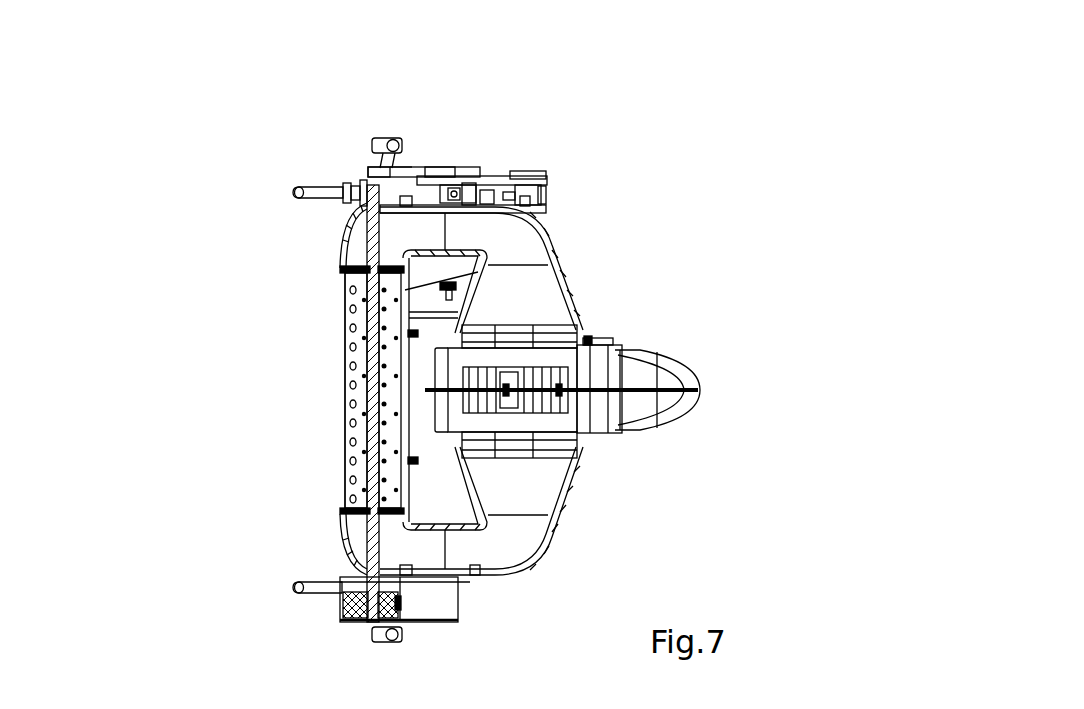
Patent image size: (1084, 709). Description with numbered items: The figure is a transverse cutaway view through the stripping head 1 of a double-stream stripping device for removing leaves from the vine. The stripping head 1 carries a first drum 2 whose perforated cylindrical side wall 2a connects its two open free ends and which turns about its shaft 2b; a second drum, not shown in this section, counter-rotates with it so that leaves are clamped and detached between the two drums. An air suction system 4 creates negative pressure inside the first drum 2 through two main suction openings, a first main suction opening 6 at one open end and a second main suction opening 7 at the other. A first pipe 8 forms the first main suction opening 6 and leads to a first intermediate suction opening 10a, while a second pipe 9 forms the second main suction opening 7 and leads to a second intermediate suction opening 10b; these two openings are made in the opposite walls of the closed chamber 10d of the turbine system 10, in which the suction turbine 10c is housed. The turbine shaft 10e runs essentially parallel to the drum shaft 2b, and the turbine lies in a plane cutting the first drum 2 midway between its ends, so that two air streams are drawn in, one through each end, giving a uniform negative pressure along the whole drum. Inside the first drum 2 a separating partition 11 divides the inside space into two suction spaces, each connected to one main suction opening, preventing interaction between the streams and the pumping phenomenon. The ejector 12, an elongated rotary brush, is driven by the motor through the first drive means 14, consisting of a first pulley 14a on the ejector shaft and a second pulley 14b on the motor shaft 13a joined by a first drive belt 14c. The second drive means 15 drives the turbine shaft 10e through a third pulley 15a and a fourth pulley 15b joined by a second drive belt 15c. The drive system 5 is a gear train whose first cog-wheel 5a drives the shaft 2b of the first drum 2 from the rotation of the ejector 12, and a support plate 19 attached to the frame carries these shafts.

The stripping head 1 is at (262, 168).
The first drum 2 is at (345, 433).
The perforated cylindrical side wall 2a is at (350, 381).
The shaft of the first drum 2b is at (372, 468).
The air suction system 4 is at (563, 200).
The drive system 5 is at (410, 613).
The first cog-wheel 5a is at (342, 620).
The first main suction opening 6 is at (343, 520).
The second main suction opening 7 is at (340, 267).
The first pipe 8 is at (563, 485).
The second pipe 9 is at (555, 268).
The turbine system 10 is at (607, 358).
The first intermediate suction opening 10a is at (536, 165).
The second intermediate suction opening 10b is at (502, 340).
The suction turbine 10c is at (477, 377).
The closed chamber 10d is at (600, 336).
The shaft of the suction turbine 10e is at (590, 340).
The separating partition 11 is at (350, 393).
The ejector 12 is at (659, 401).
The shaft of the motor 13a is at (458, 176).
The first drive means 14 is at (364, 154).
The first pulley 14a is at (376, 167).
The second pulley 14b is at (441, 167).
The first drive belt 14c is at (402, 167).
The second drive means 15 is at (514, 160).
The third pulley 15a is at (540, 172).
The fourth pulley 15b is at (468, 176).
The second drive belt 15c is at (490, 178).
The support plate 19 is at (460, 593).